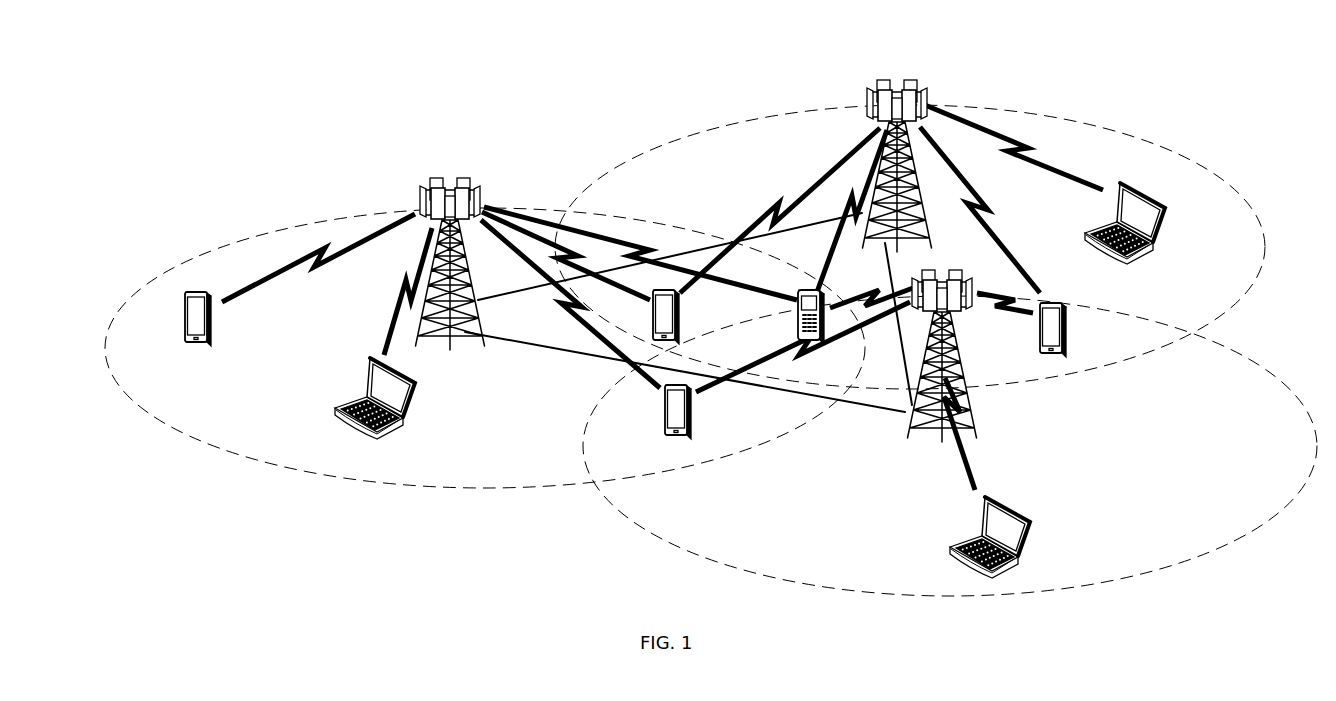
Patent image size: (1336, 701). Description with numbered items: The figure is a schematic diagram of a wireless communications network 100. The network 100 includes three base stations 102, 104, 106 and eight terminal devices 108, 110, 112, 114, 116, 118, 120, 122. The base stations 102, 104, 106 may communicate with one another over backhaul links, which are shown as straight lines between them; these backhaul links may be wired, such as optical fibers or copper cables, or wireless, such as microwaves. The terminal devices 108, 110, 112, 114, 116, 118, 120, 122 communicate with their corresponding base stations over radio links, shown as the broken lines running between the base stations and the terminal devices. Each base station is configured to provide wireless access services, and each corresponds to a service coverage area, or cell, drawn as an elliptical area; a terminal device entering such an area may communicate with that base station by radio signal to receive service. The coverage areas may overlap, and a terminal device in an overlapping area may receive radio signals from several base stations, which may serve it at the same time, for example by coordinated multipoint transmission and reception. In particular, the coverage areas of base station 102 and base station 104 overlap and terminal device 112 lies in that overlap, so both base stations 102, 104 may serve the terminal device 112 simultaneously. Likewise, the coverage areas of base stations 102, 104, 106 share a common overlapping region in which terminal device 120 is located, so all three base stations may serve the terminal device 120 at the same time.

The wireless communications network 100 is at (711, 307).
The base station 102 is at (440, 180).
The base station 104 is at (934, 272).
The base station 106 is at (908, 82).
The terminal device 108 is at (219, 318).
The terminal device 110 is at (416, 380).
The terminal device 112 is at (666, 413).
The terminal device 114 is at (1030, 516).
The terminal device 116 is at (1068, 318).
The terminal device 118 is at (1167, 219).
The terminal device 120 is at (798, 335).
The terminal device 122 is at (682, 298).